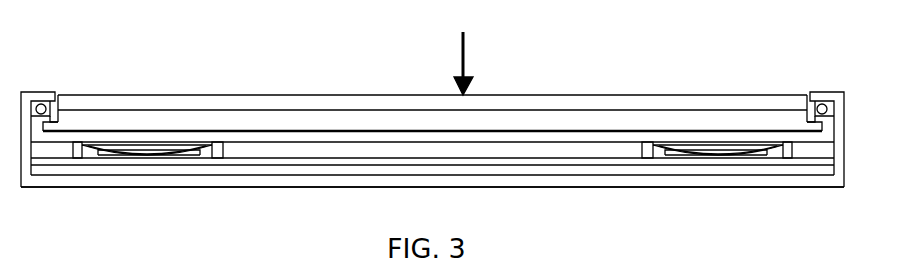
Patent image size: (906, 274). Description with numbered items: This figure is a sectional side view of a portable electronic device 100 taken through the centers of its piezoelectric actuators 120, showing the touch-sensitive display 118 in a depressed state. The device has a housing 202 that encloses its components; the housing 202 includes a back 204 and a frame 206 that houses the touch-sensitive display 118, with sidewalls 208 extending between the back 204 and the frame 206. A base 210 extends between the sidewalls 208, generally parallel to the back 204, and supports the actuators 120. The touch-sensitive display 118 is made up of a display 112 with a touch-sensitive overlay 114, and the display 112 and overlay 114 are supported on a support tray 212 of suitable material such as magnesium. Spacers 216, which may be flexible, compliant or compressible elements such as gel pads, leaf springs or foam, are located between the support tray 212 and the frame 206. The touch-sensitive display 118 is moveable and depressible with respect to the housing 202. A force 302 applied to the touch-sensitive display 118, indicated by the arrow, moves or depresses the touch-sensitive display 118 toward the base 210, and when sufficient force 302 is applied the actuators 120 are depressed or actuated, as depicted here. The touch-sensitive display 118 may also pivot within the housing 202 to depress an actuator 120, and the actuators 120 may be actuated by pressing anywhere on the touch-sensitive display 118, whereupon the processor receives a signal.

The portable electronic device 100 is at (837, 47).
The display 112 is at (302, 113).
The touch-sensitive overlay 114 is at (373, 100).
The touch-sensitive display 118 is at (254, 95).
The actuators 120 is at (163, 142).
The housing 202 is at (613, 183).
The back 204 is at (543, 180).
The frame 206 is at (36, 90).
The sidewalls 208 is at (838, 168).
The base 210 is at (457, 162).
The support tray 212 is at (392, 137).
The spacers 216 is at (821, 101).
The force 302 is at (465, 63).